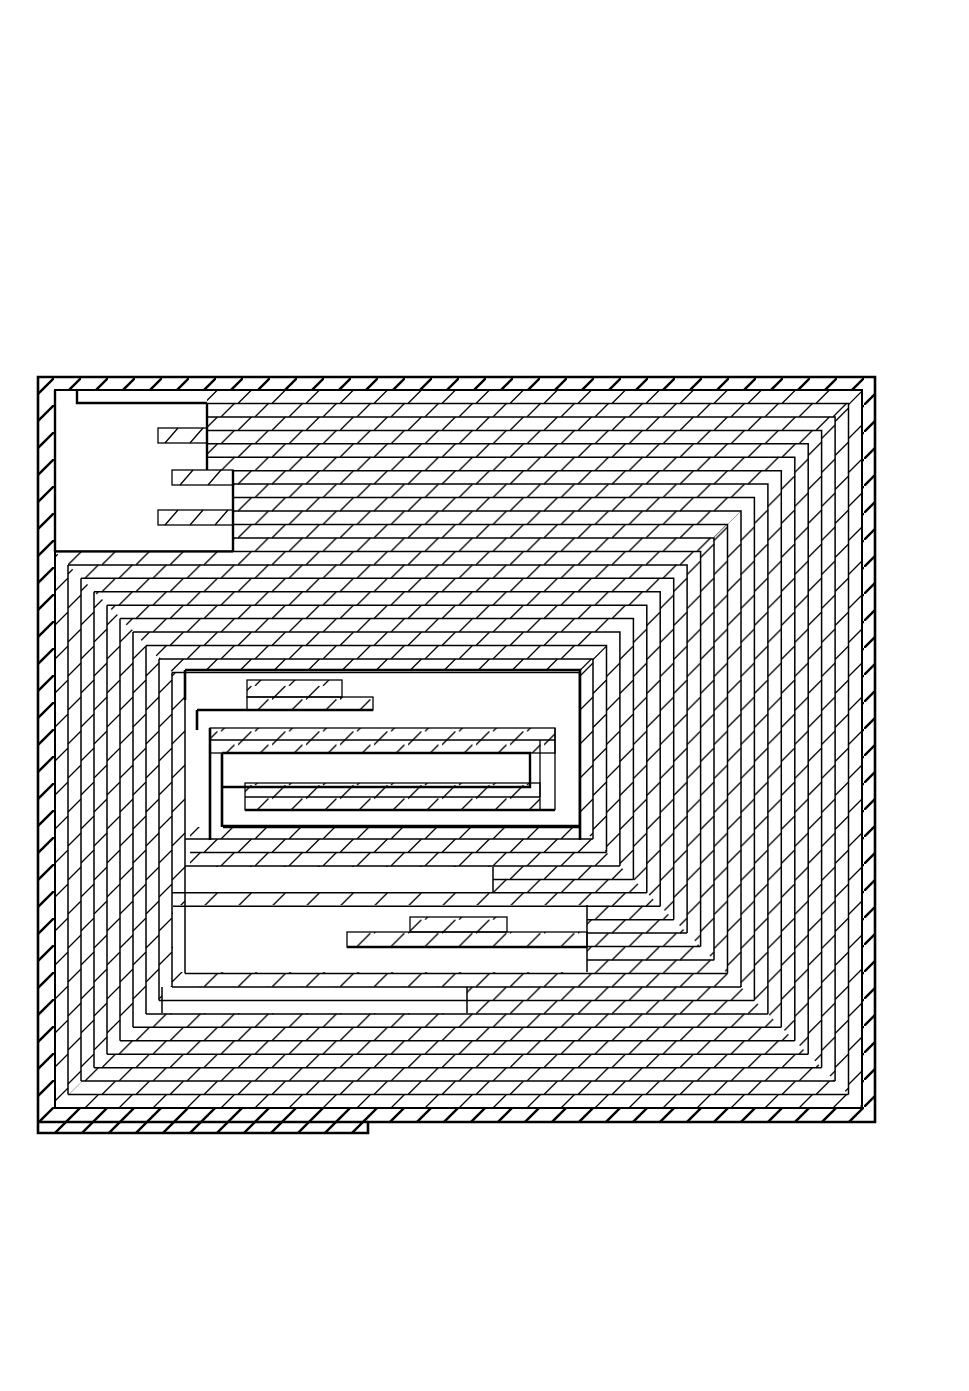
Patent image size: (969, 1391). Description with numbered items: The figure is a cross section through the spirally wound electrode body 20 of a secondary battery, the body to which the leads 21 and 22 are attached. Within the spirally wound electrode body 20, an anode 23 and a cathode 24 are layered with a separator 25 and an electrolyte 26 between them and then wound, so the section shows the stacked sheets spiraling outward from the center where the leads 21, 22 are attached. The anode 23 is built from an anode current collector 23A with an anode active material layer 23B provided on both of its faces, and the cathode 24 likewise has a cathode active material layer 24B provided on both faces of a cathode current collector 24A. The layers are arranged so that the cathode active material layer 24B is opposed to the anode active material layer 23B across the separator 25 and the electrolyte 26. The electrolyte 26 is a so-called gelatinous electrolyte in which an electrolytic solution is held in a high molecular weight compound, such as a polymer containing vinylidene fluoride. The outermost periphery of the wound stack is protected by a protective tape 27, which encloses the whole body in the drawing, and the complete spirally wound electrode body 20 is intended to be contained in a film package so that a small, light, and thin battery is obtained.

The spirally wound electrode body 20 is at (657, 104).
The lead 21 is at (457, 930).
The lead 22 is at (263, 690).
The anode 23 is at (185, 373).
The anode current collector 23A is at (112, 398).
The anode active material layer 23B is at (260, 547).
The cathode 24 is at (382, 505).
The cathode current collector 24A is at (352, 470).
The cathode active material layer 24B is at (520, 500).
The separator 25 is at (552, 512).
The electrolyte 26 is at (672, 520).
The protective tape 27 is at (822, 388).